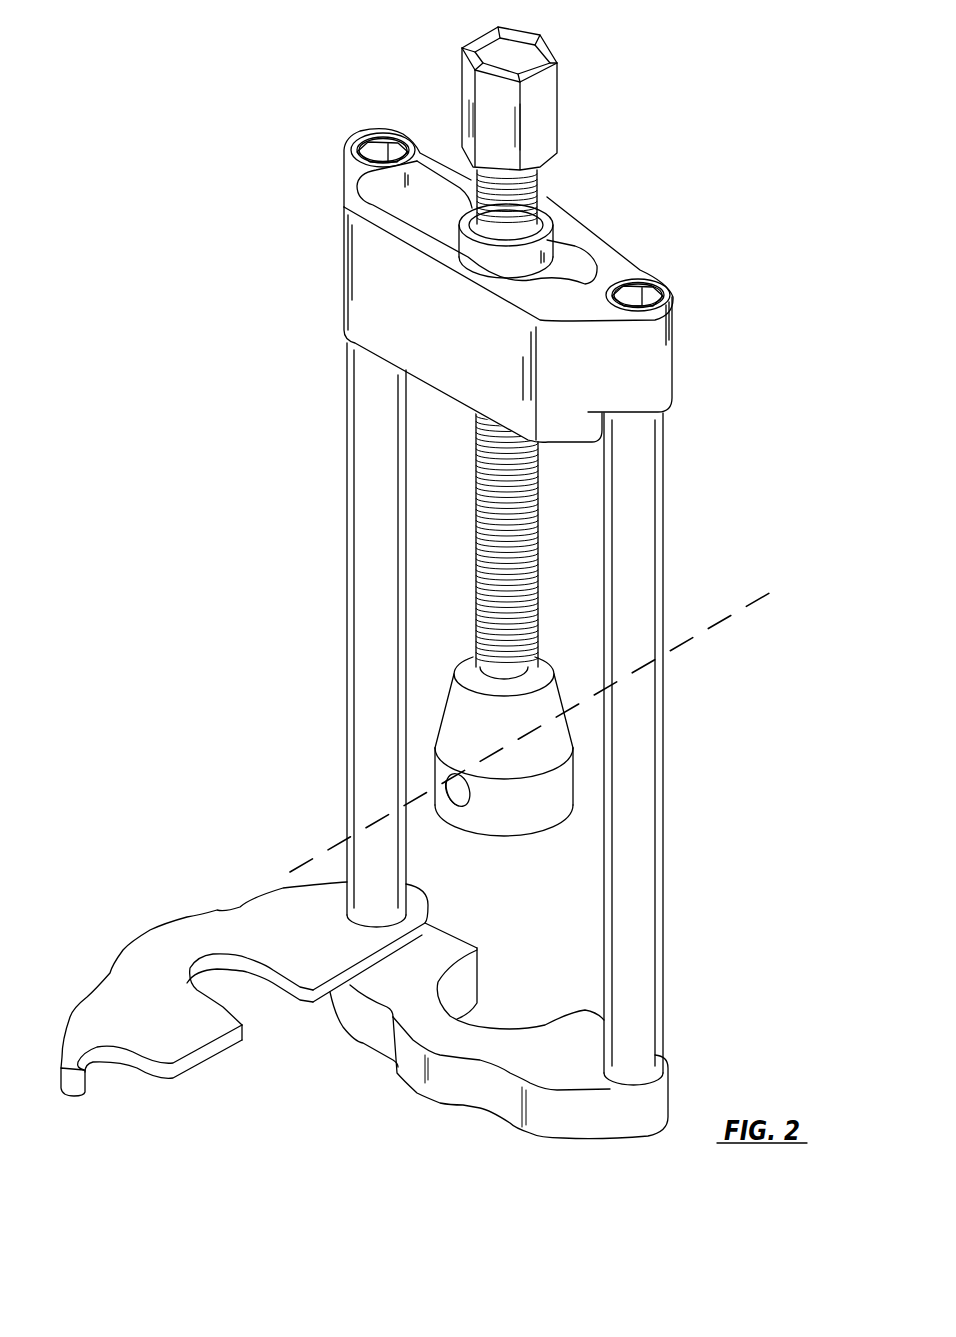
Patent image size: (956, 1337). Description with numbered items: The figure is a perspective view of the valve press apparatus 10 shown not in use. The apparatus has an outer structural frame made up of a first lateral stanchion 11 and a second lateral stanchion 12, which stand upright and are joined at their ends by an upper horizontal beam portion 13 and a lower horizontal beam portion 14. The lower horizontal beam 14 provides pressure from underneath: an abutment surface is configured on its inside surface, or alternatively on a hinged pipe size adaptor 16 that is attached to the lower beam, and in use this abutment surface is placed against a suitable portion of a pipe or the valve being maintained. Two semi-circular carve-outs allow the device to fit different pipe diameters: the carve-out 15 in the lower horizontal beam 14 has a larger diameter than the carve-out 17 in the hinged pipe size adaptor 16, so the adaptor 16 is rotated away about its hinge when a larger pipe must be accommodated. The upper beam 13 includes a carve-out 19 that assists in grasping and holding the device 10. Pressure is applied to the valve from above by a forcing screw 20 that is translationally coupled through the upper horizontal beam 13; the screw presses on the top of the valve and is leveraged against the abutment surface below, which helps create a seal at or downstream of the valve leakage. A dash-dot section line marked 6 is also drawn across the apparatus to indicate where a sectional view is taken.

The valve press apparatus 10 is at (265, 95).
The section line 6- 6 is at (287, 868).
The first lateral stanchion 11 is at (662, 803).
The second lateral stanchion 12 is at (367, 575).
The upper horizontal beam portion 13 is at (559, 286).
The lower horizontal beam portion 14 is at (499, 1034).
The semi-circular carve-out 15 is at (480, 1015).
The hinged pipe size adaptor 16 is at (243, 989).
The semi-circular carve-out 17 is at (237, 1003).
The carve-out 19 is at (593, 264).
The forcing screw 20 is at (533, 529).